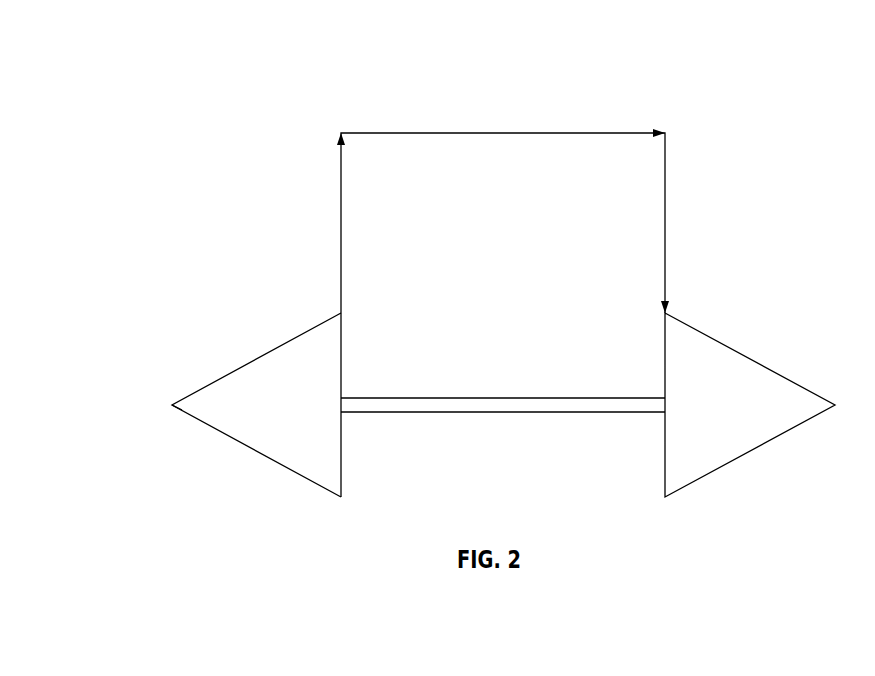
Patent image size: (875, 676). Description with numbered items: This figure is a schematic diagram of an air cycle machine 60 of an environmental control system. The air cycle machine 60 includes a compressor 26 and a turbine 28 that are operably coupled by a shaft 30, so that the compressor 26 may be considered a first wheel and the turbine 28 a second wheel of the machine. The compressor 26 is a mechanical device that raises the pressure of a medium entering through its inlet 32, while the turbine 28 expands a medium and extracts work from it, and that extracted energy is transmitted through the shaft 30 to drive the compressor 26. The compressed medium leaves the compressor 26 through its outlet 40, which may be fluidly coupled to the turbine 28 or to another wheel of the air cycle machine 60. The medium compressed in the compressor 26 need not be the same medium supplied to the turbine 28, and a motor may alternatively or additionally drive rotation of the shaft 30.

The air cycle machine 60 is at (226, 69).
The compressor 26 is at (262, 368).
The turbine 28 is at (737, 366).
The shaft 30 is at (500, 413).
The inlet of the compressor 32 is at (172, 405).
The outlet of the compressor 40 is at (341, 310).